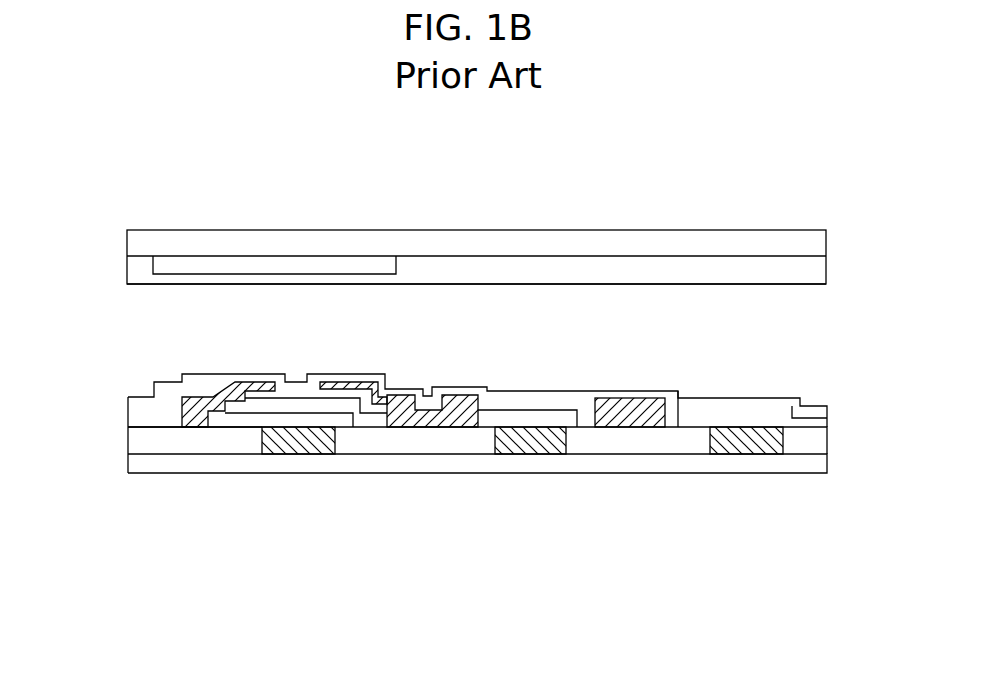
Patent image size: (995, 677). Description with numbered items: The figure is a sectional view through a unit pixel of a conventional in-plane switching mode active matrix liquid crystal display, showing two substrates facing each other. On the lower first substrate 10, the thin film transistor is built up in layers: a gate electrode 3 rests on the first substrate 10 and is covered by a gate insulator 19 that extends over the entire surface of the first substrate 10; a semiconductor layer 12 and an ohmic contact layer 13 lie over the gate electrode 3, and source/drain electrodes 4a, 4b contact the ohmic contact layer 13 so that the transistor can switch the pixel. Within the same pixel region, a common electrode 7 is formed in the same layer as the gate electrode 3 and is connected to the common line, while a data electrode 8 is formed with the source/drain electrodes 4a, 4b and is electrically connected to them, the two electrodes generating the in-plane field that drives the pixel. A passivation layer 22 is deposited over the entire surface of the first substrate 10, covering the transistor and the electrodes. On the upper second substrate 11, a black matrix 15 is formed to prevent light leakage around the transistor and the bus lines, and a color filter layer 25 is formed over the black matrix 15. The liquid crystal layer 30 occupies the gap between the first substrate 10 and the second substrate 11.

The gate electrode 3 is at (317, 447).
The source/drain electrode 4a is at (182, 411).
The source/drain electrode 4b is at (447, 430).
The common electrode 7 is at (549, 447).
The data electrode 8 is at (650, 405).
The first substrate 10 is at (820, 458).
The second substrate 11 is at (668, 237).
The semiconductor layer 12 is at (222, 427).
The ohmic contact layer 13 is at (332, 395).
The black matrix 15 is at (288, 268).
The gate insulator 19 is at (820, 433).
The passivation layer 22 is at (540, 395).
The color filter layer 25 is at (760, 277).
The liquid crystal layer 30 is at (128, 326).